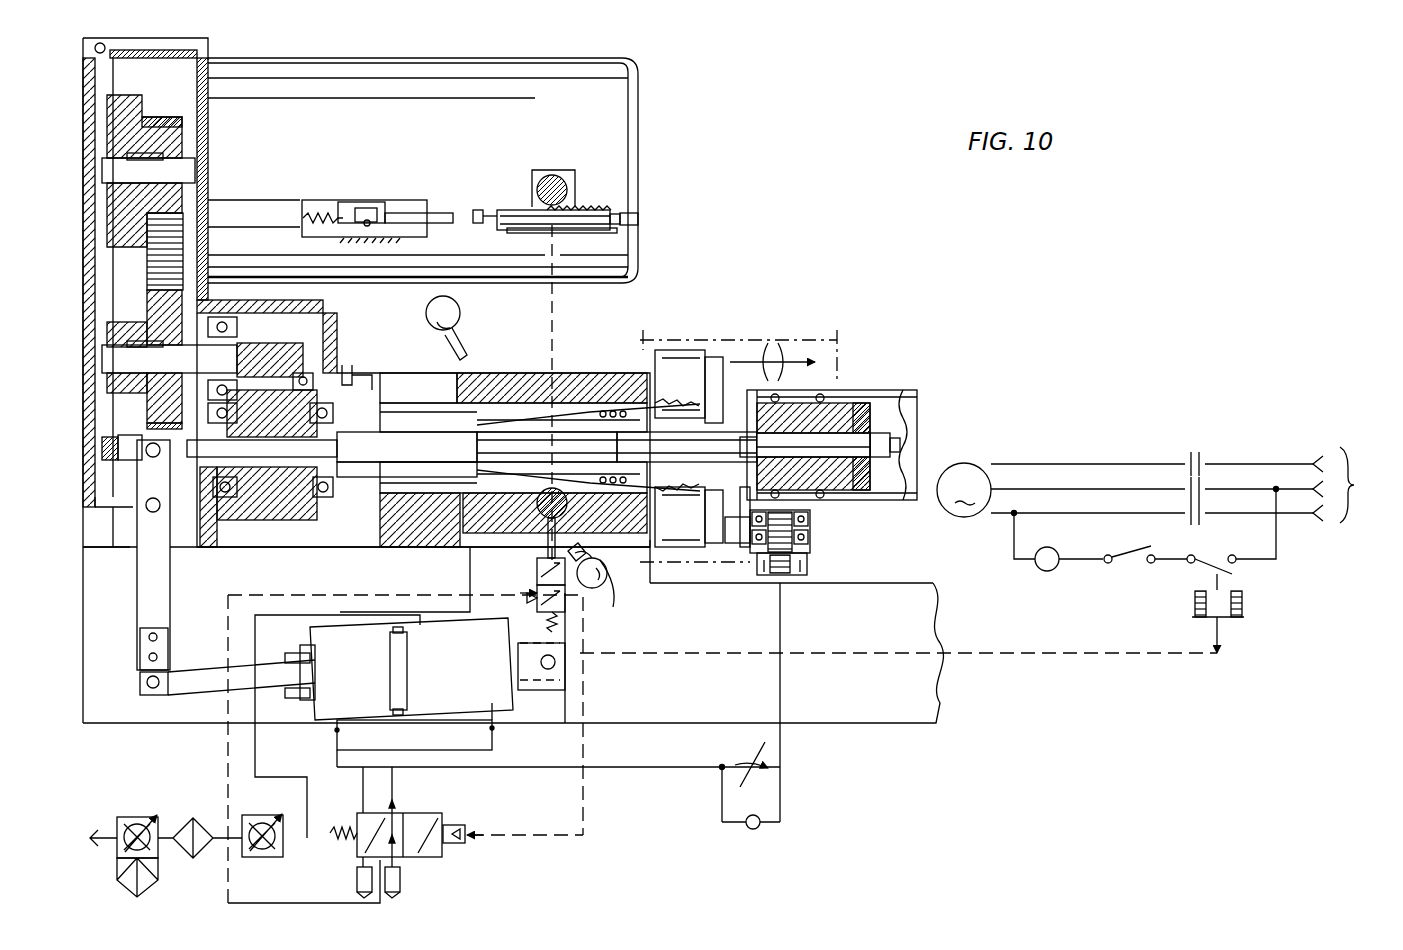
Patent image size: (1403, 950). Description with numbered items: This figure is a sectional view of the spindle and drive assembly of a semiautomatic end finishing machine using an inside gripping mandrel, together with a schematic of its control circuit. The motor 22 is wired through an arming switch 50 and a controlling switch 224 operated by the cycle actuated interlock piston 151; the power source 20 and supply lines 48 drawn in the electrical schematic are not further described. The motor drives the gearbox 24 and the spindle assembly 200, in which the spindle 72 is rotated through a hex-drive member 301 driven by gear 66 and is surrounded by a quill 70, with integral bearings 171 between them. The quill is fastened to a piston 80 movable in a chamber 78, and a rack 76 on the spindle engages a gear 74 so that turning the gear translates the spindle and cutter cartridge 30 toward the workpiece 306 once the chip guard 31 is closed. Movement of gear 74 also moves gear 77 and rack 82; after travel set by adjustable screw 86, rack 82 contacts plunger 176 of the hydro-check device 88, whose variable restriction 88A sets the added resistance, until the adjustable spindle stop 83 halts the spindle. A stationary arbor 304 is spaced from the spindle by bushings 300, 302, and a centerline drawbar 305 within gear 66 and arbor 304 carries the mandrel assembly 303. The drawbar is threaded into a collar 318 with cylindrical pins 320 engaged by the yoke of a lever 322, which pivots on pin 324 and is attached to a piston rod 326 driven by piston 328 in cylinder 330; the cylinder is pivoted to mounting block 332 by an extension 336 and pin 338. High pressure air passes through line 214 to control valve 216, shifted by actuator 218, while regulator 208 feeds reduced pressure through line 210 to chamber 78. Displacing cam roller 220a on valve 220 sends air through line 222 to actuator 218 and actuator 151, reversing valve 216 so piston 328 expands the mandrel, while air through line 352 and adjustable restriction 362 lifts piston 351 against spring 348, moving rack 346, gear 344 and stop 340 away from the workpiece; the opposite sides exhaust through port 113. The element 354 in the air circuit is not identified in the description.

The power source 20 is at (964, 490).
The motor 22 is at (570, 58).
The gearbox 24 is at (243, 303).
The cutter cartridge 30 is at (672, 355).
The chip guard 31 is at (727, 352).
The power lines 48 is at (1192, 486).
The arming switch 50 is at (1100, 558).
The gear 66 is at (273, 547).
The quill 70 is at (562, 415).
The spindle 72 is at (505, 422).
The gear 74 is at (540, 515).
The rack 76 is at (470, 547).
The gear 77 is at (567, 180).
The cylinder 78 is at (397, 373).
The piston 80 is at (397, 368).
The rack 82 is at (590, 210).
The adjustable spindle stop 83 is at (640, 222).
The adjustable screw 86 is at (478, 210).
The hydro-check device 88 is at (303, 203).
The variable restriction 88A is at (366, 205).
The exhaust port 113 is at (330, 849).
The cycle actuated interlock piston 151 is at (1244, 615).
The integral bearings 171 is at (623, 410).
The plunger 176 is at (437, 213).
The spindle assembly 200 is at (480, 373).
The pressure regulator 208 is at (258, 857).
The line 210 is at (258, 616).
The line 214 is at (227, 851).
The control valve 216 is at (357, 818).
The actuator 218 is at (453, 845).
The valve 220 is at (565, 610).
The cam roller 220a is at (628, 598).
The line 222 is at (227, 739).
The controlling switch 224 is at (1240, 580).
The bushing 300 is at (547, 447).
The hex-drive member 301 is at (407, 454).
The bushing 302 is at (672, 550).
The mandrel assembly 303 is at (857, 400).
The arbor 304 is at (687, 447).
The drawbar 305 is at (333, 547).
The tubular workpiece 306 is at (905, 395).
The collar 318 is at (113, 440).
The cylindrical pins 320 is at (120, 462).
The lever 322 is at (160, 578).
The pin 324 is at (150, 511).
The piston rod 326 is at (163, 690).
The piston 328 is at (407, 678).
The cylinder 330 is at (422, 627).
The mounting block 332 is at (543, 703).
The extension 336 is at (555, 664).
The pin 338 is at (572, 680).
The stop 340 is at (732, 550).
The gear 344 is at (812, 540).
The rack 346 is at (792, 570).
The spring 348 is at (812, 570).
The piston 351 is at (792, 567).
The line 352 is at (650, 767).
The check valve 354 is at (746, 827).
The adjustable restriction 362 is at (767, 757).